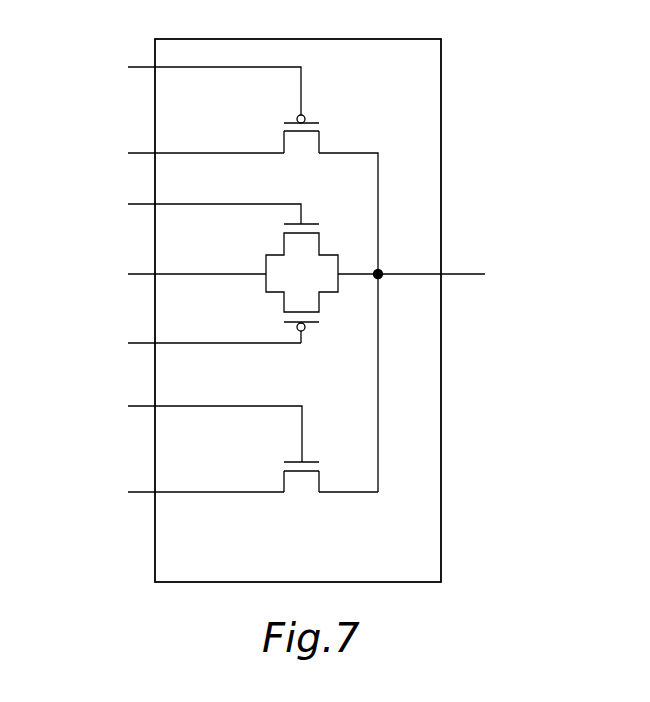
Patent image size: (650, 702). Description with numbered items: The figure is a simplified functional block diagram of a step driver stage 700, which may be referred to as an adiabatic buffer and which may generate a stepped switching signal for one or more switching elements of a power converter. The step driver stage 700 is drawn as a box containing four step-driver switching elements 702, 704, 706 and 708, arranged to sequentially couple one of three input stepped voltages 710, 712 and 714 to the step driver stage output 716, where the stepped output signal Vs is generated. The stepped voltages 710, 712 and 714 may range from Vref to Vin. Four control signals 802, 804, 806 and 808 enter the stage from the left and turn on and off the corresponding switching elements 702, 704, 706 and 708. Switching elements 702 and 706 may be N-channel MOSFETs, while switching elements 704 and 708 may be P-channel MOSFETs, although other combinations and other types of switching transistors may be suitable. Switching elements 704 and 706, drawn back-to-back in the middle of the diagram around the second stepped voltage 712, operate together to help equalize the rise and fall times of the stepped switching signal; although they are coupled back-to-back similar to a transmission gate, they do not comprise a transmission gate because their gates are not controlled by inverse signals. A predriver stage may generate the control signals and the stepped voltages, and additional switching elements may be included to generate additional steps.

The step driver stage 700 is at (435, 64).
The step-driver switching element 702 is at (302, 475).
The step-driver switching element 704 is at (307, 332).
The step-driver switching element 706 is at (305, 222).
The step-driver switching element 708 is at (301, 135).
The input stepped voltage 710 is at (142, 496).
The input stepped voltage 712 is at (141, 274).
The input stepped voltage 714 is at (141, 153).
The step driver stage output 716 is at (465, 275).
The control signal 802 is at (142, 410).
The control signal 804 is at (141, 343).
The control signal 806 is at (141, 204).
The control signal 808 is at (141, 66).